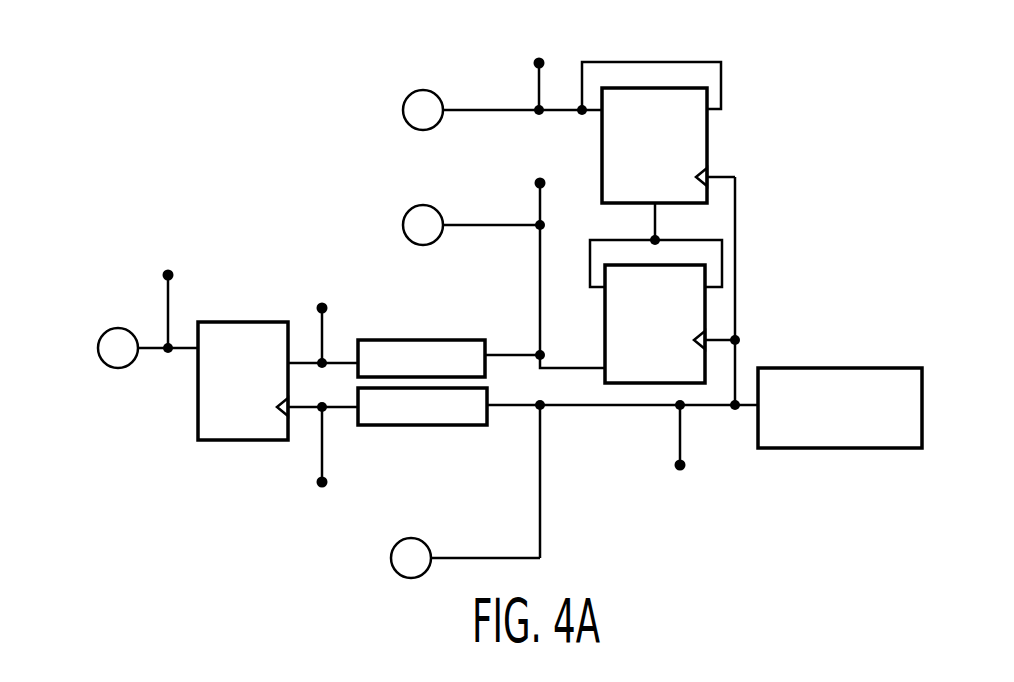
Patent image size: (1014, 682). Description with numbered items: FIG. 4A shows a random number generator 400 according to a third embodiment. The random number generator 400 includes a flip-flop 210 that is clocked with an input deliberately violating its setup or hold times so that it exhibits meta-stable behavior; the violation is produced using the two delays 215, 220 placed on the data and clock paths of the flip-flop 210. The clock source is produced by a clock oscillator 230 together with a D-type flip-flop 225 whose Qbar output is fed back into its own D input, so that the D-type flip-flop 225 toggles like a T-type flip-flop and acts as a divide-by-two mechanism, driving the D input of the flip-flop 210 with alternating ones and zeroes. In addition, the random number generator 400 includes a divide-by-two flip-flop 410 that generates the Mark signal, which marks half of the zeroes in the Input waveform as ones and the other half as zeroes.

The random number generator 400 is at (204, 168).
The flip-flop 210 is at (198, 414).
The delay 215 is at (424, 338).
The delay 220 is at (445, 427).
The D-type flip-flop 225 is at (605, 339).
The clock oscillator 230 is at (843, 448).
The divide-by-two flip-flop 410 is at (707, 140).